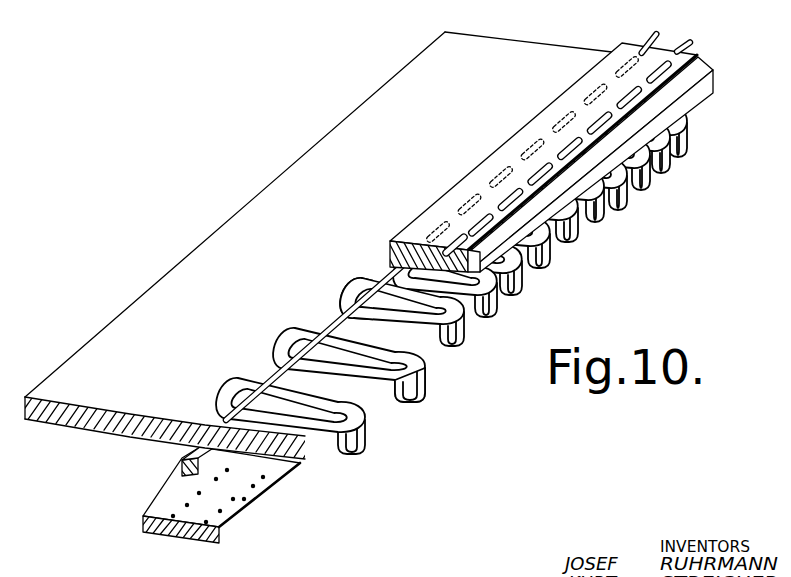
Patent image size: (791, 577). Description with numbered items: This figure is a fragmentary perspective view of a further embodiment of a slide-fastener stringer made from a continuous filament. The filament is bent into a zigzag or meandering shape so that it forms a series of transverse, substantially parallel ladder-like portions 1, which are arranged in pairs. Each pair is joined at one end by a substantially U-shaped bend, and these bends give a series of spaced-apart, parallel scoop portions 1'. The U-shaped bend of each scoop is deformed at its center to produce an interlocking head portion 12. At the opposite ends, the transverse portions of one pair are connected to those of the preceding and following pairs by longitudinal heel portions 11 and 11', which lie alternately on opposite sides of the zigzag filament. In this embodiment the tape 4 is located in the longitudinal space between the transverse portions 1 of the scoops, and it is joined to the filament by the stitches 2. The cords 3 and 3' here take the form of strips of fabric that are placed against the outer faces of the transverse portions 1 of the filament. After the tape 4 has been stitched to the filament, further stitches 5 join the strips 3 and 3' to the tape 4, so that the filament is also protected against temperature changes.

The transverse ladder-like portions 1 is at (226, 485).
The scoop portions 1' is at (411, 410).
The stitches 2 is at (327, 327).
The cord 3 is at (546, 138).
The cord 3' is at (259, 502).
The tape 4 is at (260, 197).
The stitches 5 is at (686, 44).
The inner longitudinal heel portions 11 is at (393, 288).
The inner longitudinal heel portions 11' is at (172, 474).
The interlocking head portion 12 is at (324, 452).